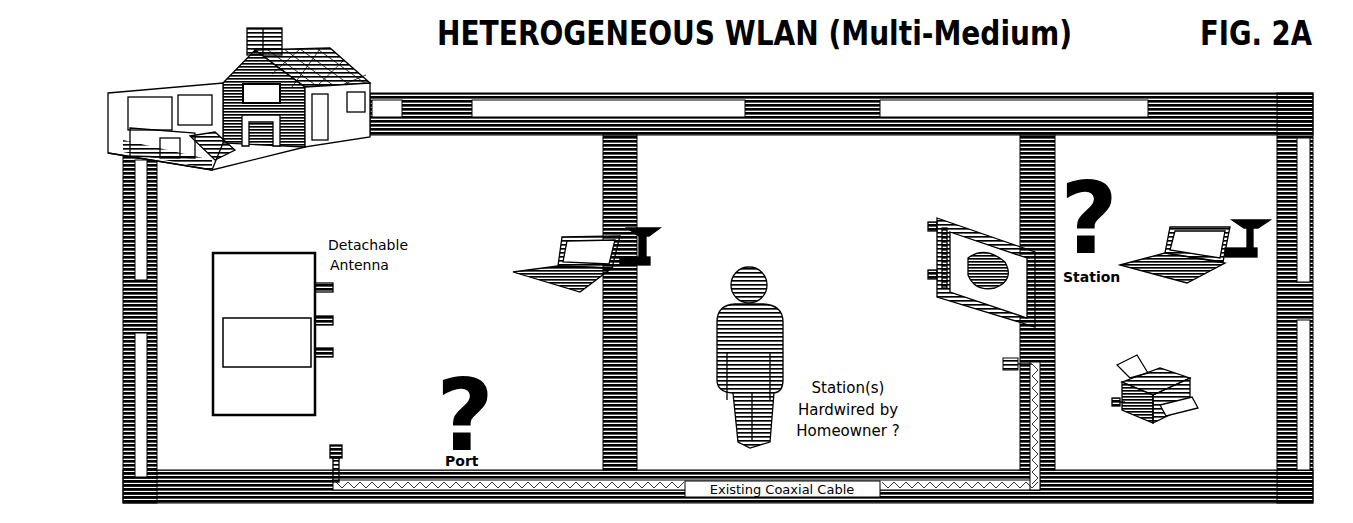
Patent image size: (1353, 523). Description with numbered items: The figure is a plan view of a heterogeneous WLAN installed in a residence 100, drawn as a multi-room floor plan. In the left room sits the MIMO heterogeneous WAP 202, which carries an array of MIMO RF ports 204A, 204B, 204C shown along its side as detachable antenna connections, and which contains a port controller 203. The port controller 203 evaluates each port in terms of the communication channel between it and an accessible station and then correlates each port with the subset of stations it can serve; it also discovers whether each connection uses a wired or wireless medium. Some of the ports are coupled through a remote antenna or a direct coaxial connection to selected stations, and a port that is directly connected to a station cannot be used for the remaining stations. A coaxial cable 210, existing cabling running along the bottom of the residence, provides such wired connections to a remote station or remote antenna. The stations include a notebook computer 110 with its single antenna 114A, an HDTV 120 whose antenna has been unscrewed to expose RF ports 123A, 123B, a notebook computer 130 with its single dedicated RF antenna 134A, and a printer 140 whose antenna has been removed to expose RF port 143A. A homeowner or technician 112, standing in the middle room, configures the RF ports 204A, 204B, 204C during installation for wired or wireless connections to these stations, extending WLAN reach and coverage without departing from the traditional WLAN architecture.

The residence 100 is at (218, 83).
The MIMO heterogeneous WAP 202 is at (284, 253).
The port controller 203 is at (268, 368).
The MIMO RF port 204A is at (334, 289).
The MIMO RF port 204B is at (334, 321).
The MIMO RF port 204C is at (334, 353).
The coaxial cable 210 is at (333, 466).
The notebook computer 110 is at (560, 246).
The antenna 114A is at (650, 250).
The homeowner or technician 112 is at (742, 340).
The HDTV 120 is at (976, 306).
The RF port 123A is at (928, 225).
The RF port 123B is at (928, 276).
The notebook computer 130 is at (1168, 240).
The dedicated RF antenna 134A is at (1251, 220).
The printer 140 is at (1180, 372).
The RF port 143A is at (1092, 414).